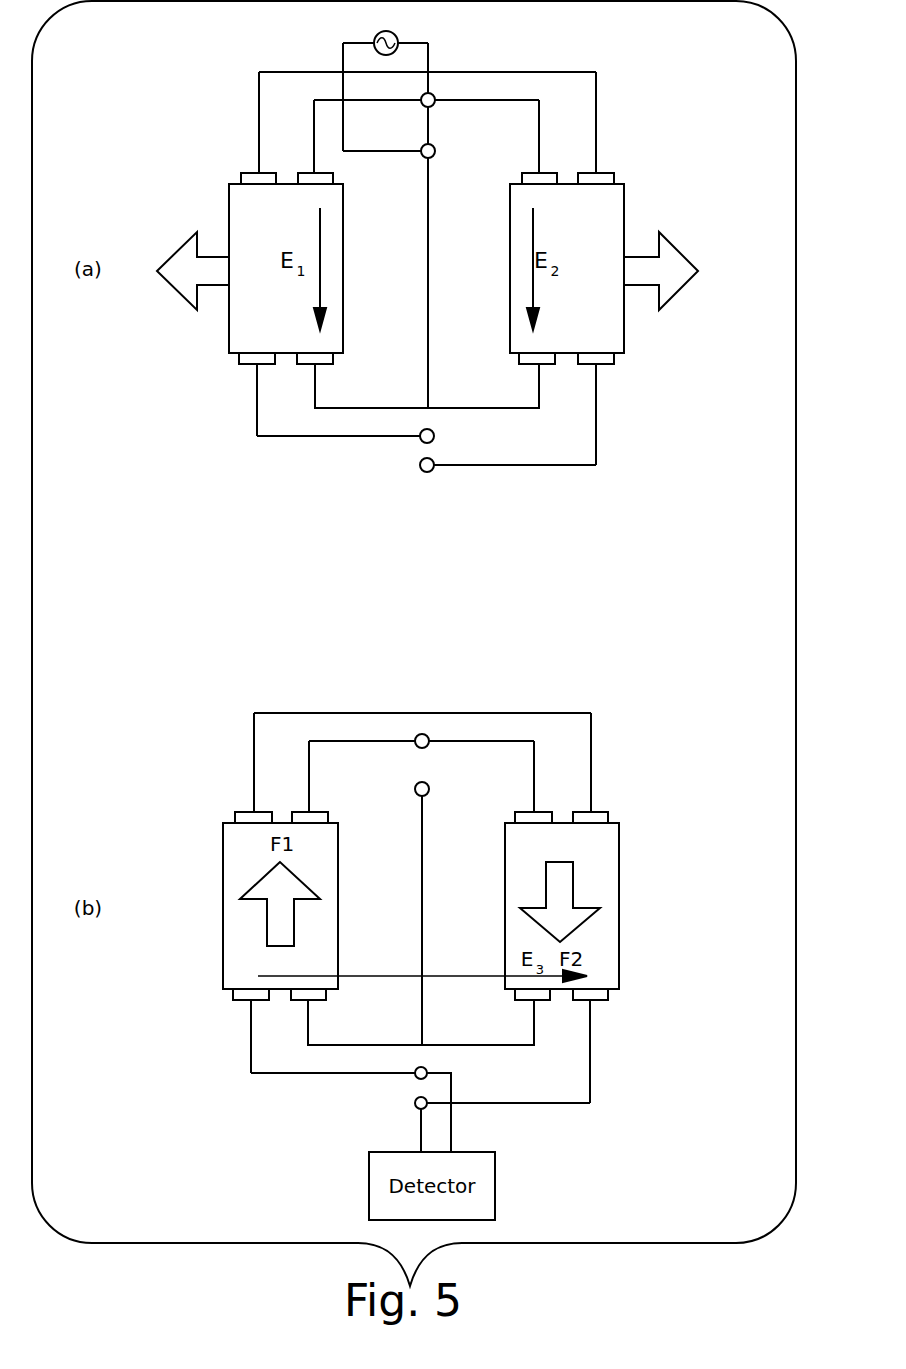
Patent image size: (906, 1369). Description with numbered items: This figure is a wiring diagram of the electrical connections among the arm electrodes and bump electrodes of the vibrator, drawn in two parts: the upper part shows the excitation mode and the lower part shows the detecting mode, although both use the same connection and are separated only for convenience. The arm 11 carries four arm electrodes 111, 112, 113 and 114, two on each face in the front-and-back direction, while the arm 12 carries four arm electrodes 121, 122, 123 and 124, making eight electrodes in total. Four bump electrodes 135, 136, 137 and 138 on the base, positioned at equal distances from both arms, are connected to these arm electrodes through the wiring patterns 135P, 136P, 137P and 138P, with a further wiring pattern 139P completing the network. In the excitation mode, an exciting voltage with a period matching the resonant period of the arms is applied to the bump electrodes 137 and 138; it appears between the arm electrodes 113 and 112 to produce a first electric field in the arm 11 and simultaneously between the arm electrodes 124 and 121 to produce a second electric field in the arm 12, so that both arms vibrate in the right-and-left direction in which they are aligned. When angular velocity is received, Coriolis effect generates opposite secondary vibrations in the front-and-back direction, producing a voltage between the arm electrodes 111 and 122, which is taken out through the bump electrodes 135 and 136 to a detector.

The arm 11 is at (230, 200).
The arm 12 is at (612, 201).
The arm electrode 111 is at (247, 365).
The arm electrode 112 is at (320, 365).
The arm electrode 113 is at (333, 178).
The arm electrode 114 is at (250, 172).
The arm electrode 121 is at (535, 365).
The arm electrode 122 is at (600, 365).
The arm electrode 123 is at (605, 173).
The arm electrode 124 is at (532, 173).
The bump electrode 135 is at (427, 1068).
The bump electrode 136 is at (415, 1103).
The bump electrode 137 is at (436, 150).
The bump electrode 138 is at (434, 105).
The wiring pattern 135P is at (303, 437).
The wiring pattern 136P is at (540, 466).
The wiring pattern 137P is at (428, 218).
The wiring pattern 138P is at (505, 100).
The wiring pattern 139P is at (505, 72).